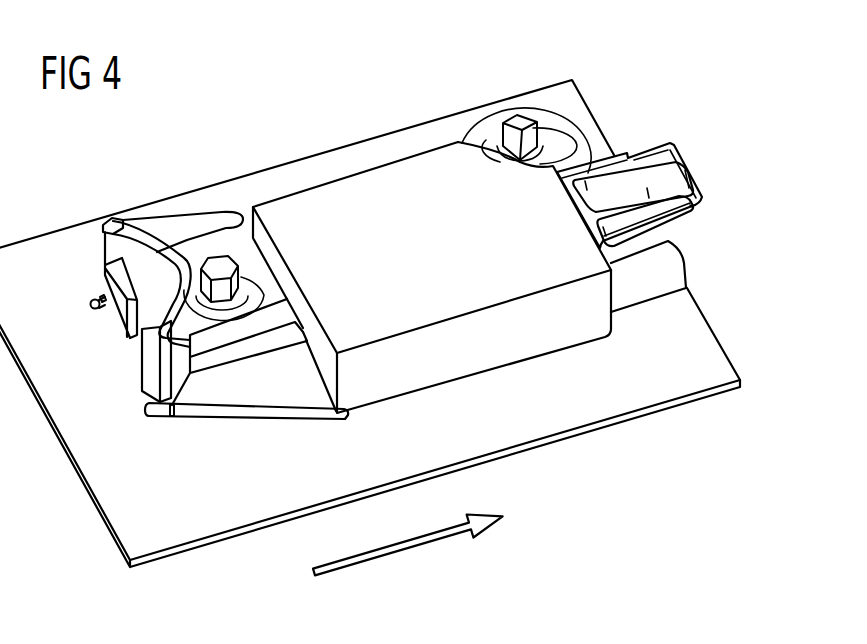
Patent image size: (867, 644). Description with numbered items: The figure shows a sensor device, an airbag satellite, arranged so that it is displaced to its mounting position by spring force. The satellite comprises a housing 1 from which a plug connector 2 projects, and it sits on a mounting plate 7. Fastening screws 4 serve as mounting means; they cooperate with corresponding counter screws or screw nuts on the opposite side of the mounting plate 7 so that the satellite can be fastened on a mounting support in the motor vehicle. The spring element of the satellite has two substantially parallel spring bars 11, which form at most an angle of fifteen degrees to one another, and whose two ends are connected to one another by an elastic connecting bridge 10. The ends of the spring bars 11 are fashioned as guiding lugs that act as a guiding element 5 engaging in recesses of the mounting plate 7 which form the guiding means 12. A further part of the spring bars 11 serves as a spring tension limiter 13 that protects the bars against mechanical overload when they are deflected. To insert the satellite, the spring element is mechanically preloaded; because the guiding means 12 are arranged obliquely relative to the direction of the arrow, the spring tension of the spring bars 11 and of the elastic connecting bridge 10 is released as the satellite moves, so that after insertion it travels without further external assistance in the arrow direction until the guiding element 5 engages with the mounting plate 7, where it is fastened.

The housing 1 is at (463, 358).
The plug connector 2 is at (638, 293).
The fastening screws 4 is at (516, 126).
The guiding element 5 is at (100, 299).
The mounting plate 7 is at (713, 366).
The elastic connecting bridge 10 is at (128, 242).
The spring bars 11 is at (245, 221).
The guiding means 12 is at (95, 306).
The spring tension limiter 13 is at (143, 349).